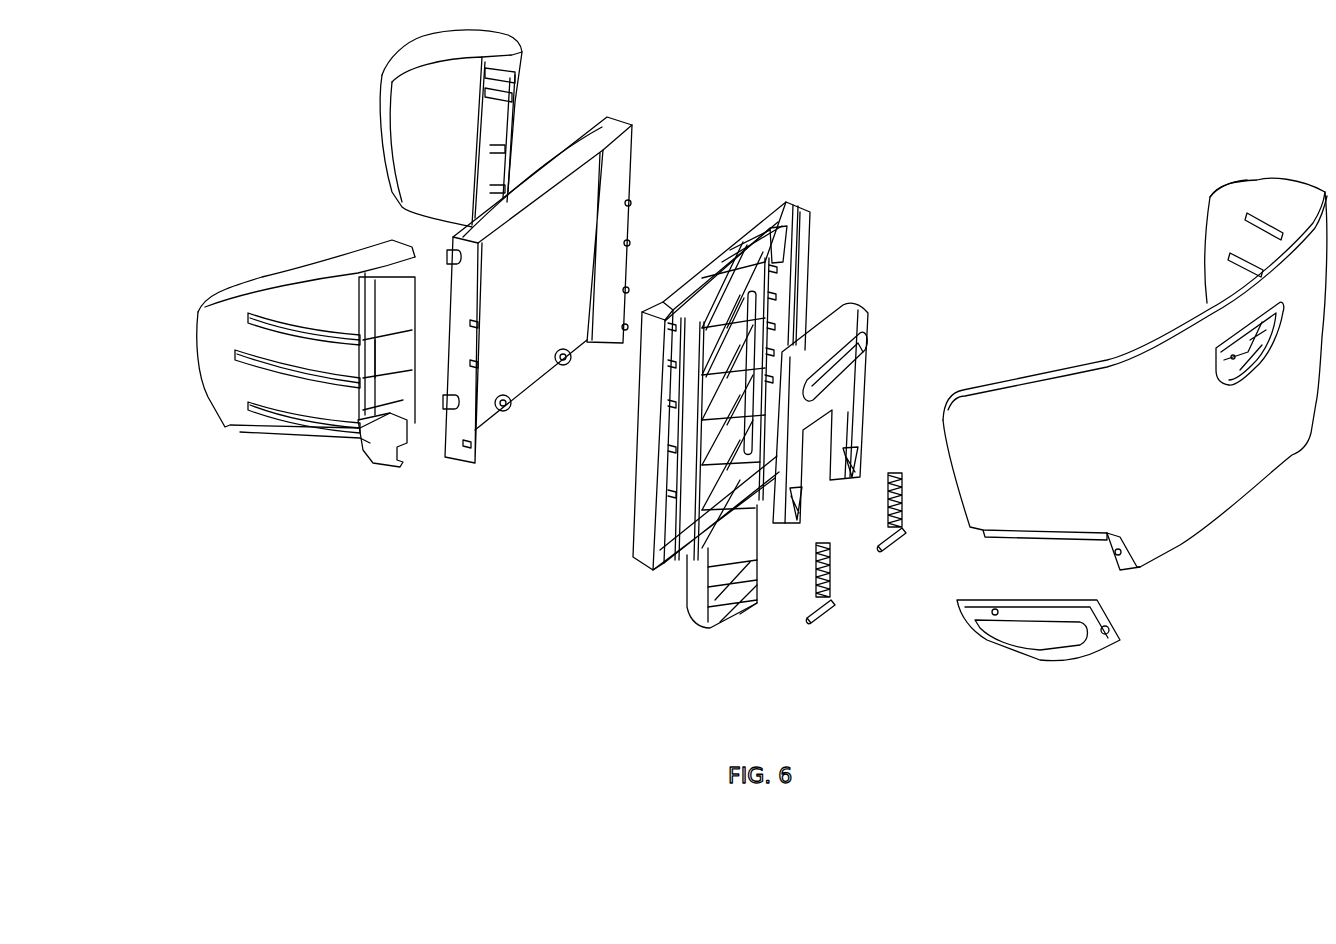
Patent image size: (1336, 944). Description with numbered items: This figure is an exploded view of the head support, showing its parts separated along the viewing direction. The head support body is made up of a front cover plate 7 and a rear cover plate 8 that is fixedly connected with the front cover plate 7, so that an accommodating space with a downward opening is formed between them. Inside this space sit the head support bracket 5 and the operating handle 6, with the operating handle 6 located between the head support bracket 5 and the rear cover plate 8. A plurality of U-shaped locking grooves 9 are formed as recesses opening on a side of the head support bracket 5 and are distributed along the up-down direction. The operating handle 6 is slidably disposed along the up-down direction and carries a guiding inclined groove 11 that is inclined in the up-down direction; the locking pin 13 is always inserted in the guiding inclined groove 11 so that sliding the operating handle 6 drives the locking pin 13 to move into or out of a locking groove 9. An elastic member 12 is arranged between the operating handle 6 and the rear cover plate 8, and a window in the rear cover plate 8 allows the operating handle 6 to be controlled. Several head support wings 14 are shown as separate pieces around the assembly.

The head support bracket 5 is at (688, 494).
The operating handle 6 is at (840, 328).
The front cover plate 7 is at (583, 205).
The rear cover plate 8 is at (1225, 472).
The locking groove 9 is at (768, 292).
The guiding inclined groove 11 is at (862, 448).
The elastic member 12 is at (905, 505).
The locking pin 13 is at (905, 543).
The head support wing 14 is at (413, 105).